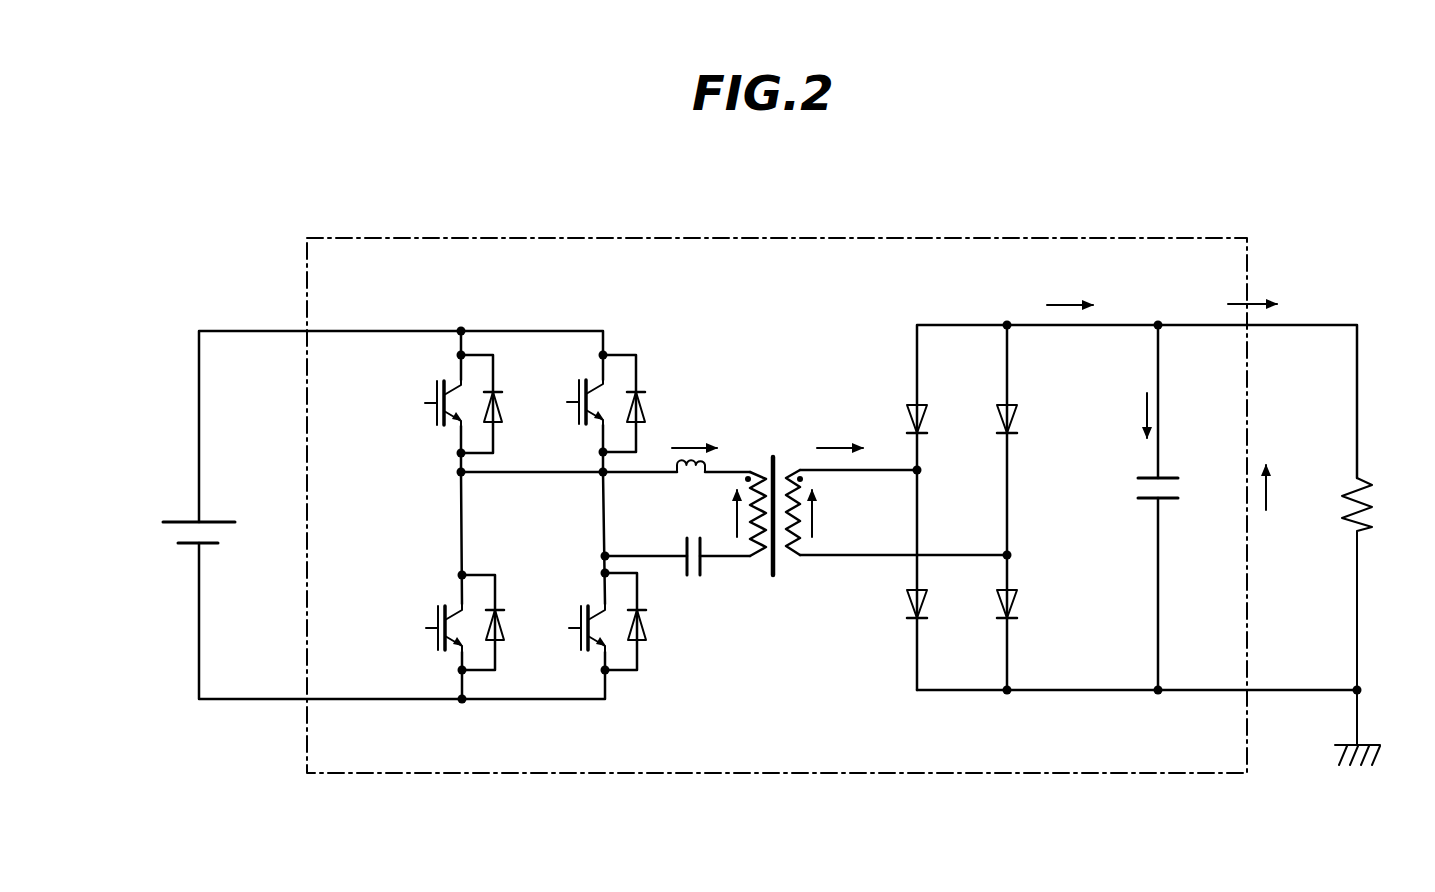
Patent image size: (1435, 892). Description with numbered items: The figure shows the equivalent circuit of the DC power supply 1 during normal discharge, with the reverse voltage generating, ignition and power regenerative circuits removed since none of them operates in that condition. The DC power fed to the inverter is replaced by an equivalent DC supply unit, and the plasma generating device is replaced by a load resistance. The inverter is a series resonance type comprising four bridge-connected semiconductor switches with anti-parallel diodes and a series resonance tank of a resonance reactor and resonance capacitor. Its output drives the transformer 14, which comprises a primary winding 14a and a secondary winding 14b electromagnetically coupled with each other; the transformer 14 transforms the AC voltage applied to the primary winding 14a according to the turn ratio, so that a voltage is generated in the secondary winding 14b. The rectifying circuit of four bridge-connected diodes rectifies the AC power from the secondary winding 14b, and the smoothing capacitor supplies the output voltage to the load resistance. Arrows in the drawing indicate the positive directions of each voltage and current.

The DC power supply 1 is at (1178, 237).
The transformer 14 is at (798, 588).
The primary winding 14a is at (750, 468).
The secondary winding 14b is at (789, 468).